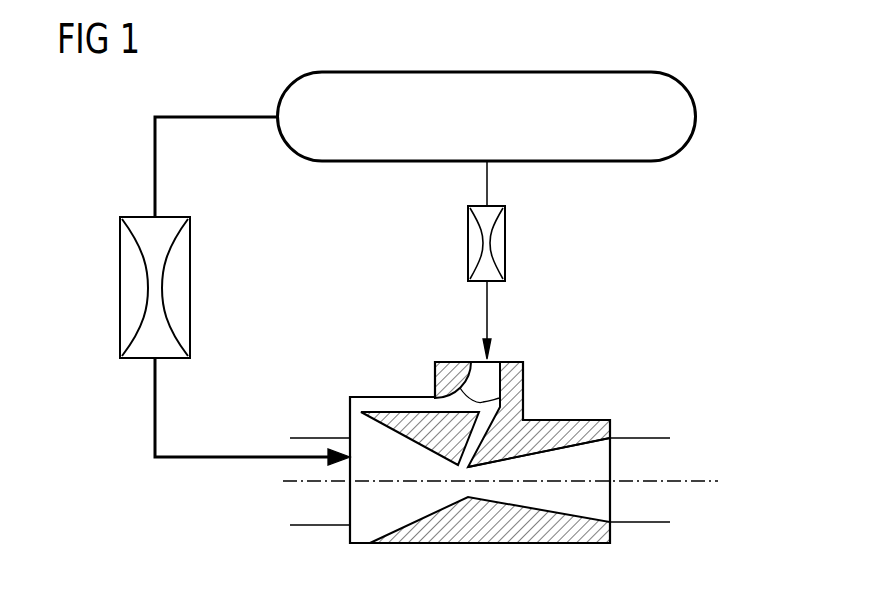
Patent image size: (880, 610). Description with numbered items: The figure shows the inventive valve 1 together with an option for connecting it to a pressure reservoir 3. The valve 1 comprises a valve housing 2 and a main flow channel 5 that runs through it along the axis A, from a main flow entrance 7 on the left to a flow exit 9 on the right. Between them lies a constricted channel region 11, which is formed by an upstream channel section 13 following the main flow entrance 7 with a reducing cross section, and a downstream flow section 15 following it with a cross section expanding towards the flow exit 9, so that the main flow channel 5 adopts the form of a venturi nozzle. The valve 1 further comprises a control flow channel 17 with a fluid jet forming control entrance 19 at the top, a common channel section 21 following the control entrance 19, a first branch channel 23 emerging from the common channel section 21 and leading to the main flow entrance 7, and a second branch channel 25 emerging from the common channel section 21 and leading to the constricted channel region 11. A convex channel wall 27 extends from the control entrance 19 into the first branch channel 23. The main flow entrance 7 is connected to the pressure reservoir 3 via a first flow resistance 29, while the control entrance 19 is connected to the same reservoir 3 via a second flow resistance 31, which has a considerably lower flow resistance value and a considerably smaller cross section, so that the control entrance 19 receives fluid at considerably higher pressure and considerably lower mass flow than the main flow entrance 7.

The valve 1 is at (620, 330).
The valve housing 2 is at (363, 397).
The pressure reservoir 3 is at (696, 117).
The main flow channel 5 is at (598, 473).
The main flow entrance 7 is at (349, 492).
The flow exit 9 is at (612, 490).
The constricted channel region 11 is at (477, 490).
The upstream channel section 13 is at (381, 499).
The downstream flow section 15 is at (562, 497).
The control flow channel 17 is at (523, 366).
The control entrance 19 is at (493, 362).
The common channel section 21 is at (482, 373).
The first branch channel 23 is at (403, 406).
The second branch channel 25 is at (458, 462).
The convex channel wall 27 is at (492, 385).
The first flow resistance 29 is at (118, 287).
The second flow resistance 31 is at (467, 243).
The axis A is at (698, 481).